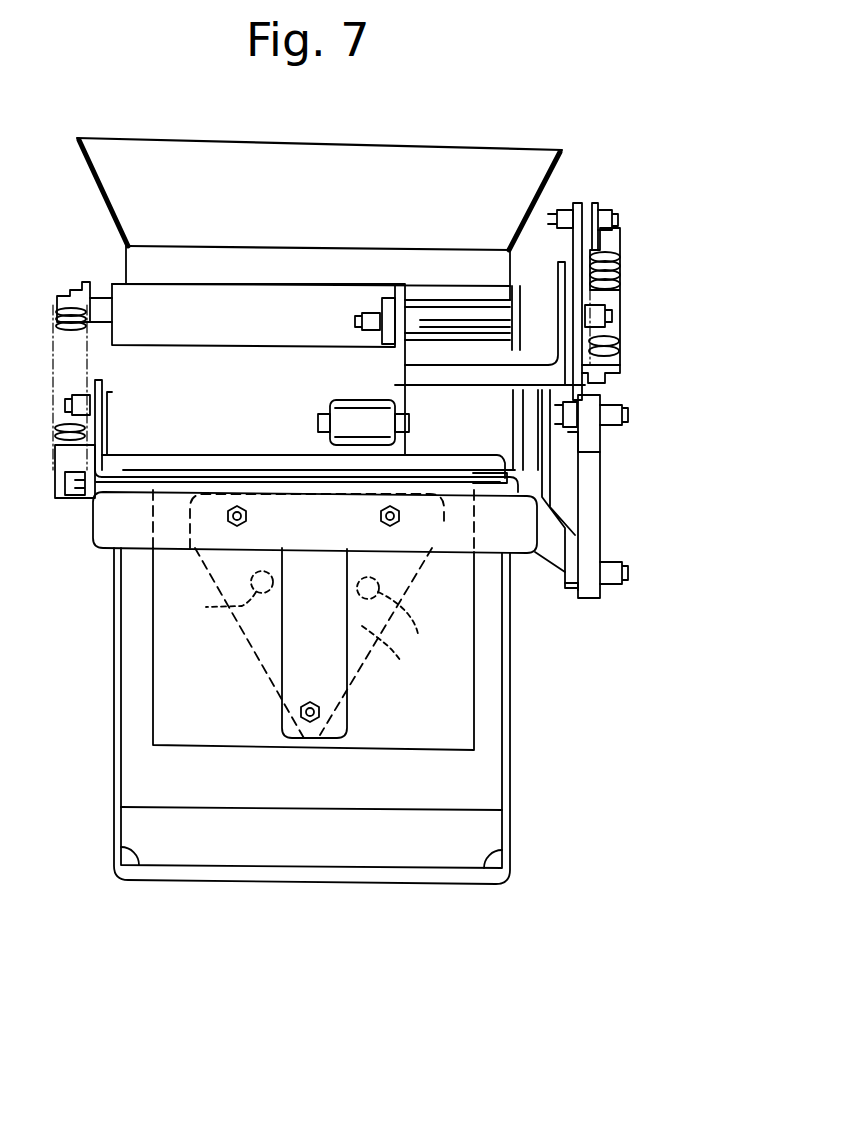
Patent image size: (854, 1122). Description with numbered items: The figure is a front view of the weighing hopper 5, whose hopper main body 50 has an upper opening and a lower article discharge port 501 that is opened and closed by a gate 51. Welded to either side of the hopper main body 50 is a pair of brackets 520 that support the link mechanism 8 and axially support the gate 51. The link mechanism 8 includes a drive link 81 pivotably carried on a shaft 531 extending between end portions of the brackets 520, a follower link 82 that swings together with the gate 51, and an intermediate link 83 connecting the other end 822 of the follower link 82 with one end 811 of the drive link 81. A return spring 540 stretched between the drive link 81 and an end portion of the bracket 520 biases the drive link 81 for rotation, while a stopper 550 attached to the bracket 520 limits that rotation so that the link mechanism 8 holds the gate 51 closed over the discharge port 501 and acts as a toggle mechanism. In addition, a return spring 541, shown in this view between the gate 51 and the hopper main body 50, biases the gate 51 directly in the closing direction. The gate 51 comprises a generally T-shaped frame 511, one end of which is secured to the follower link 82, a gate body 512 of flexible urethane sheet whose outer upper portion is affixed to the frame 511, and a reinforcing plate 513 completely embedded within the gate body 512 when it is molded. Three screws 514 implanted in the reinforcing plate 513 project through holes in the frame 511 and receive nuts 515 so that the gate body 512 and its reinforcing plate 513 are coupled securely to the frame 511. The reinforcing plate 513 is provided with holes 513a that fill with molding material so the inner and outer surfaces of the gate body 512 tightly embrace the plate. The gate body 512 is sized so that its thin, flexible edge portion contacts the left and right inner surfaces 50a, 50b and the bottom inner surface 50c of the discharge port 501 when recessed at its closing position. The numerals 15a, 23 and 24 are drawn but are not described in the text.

The weighing hopper 5 is at (640, 116).
The hopper main body 50 is at (456, 154).
The stopper 550 is at (544, 282).
The mounting tab 15a is at (520, 300).
The bracket 520 is at (410, 288).
The shaft 531 is at (360, 323).
The arm 23 is at (474, 384).
The roller 24 is at (398, 392).
The return spring 541 is at (62, 320).
The drive link 81 is at (584, 204).
The return spring 540 is at (608, 290).
The link mechanism 8 is at (640, 410).
The intermediate link 83 is at (596, 486).
The one end of drive link 811 is at (574, 435).
The follower link 82 is at (559, 543).
The other end of follower link 822 is at (571, 608).
The gate body 512 is at (168, 690).
The left inner surface 50a is at (132, 880).
The right inner surface 50b is at (494, 884).
The bottom inner surface 50c is at (292, 850).
The article discharge port 501 is at (358, 854).
The gate 51 is at (240, 811).
The frame 511 is at (290, 629).
The reinforcing plate 513 is at (370, 640).
The holes 513a is at (303, 615).
The screws 514 is at (236, 520).
The nuts 515 is at (252, 508).